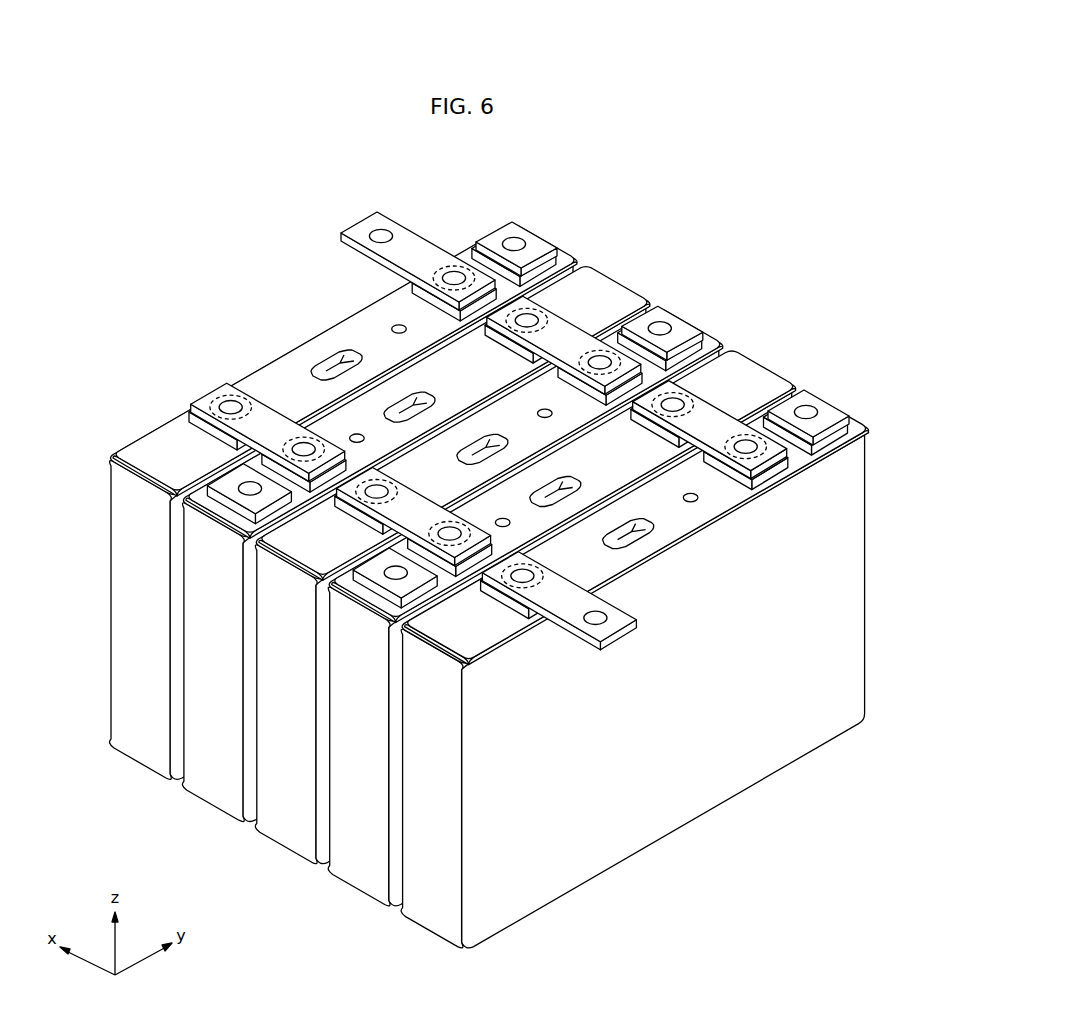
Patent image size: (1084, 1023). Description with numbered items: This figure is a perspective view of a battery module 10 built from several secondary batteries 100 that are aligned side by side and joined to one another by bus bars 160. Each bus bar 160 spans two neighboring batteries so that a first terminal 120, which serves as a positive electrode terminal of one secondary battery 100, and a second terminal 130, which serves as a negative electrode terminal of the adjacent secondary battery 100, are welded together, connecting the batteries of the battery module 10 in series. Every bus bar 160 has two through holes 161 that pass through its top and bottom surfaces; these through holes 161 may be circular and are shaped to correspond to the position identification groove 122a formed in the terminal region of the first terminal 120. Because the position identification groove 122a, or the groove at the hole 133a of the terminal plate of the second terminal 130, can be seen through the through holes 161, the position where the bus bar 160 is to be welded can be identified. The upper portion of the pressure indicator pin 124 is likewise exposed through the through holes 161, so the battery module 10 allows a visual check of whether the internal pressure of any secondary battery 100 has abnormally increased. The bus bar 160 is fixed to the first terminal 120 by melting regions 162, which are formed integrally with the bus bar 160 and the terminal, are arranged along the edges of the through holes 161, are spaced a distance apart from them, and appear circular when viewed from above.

The battery module 10 is at (536, 554).
The secondary battery 100 is at (870, 591).
The first terminal 120 is at (815, 407).
The position identification groove 122a is at (775, 462).
The pressure indicator pin 124 is at (447, 273).
The second terminal 130 is at (503, 603).
The hole of the terminal plate 133a is at (727, 517).
The bus bar 160 is at (574, 332).
The through hole 161 is at (521, 316).
The melting region 162 is at (554, 310).